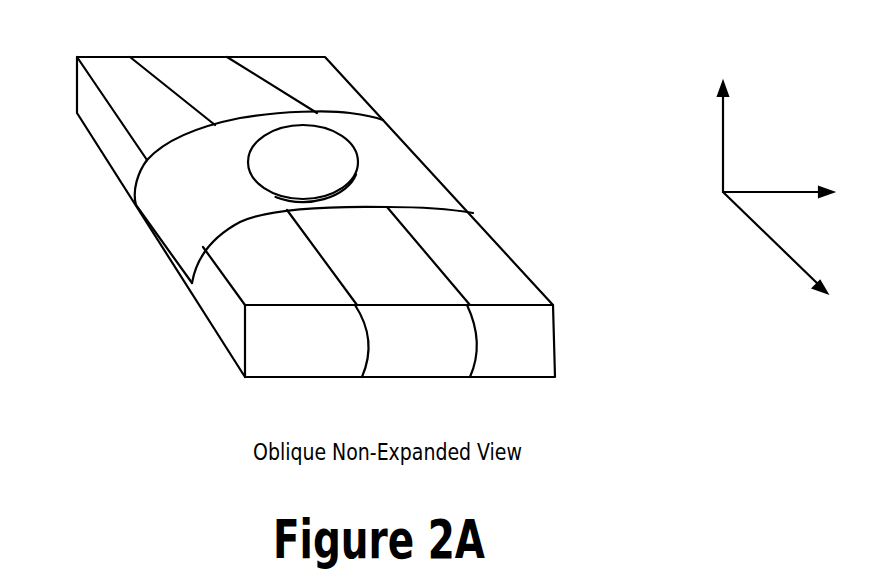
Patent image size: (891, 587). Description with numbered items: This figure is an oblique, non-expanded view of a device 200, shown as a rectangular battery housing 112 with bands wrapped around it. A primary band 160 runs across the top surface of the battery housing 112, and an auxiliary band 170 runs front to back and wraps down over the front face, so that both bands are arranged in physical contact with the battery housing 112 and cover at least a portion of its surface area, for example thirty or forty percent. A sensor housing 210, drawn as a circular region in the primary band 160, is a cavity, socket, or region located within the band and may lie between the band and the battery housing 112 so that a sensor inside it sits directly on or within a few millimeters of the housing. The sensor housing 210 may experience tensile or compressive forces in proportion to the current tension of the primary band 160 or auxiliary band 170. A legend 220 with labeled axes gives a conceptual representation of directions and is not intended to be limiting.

The device 200 is at (343, 215).
The battery housing 112 is at (555, 327).
The primary band 160 is at (304, 197).
The auxiliary band 170 is at (368, 338).
The sensor housing 210 is at (249, 170).
The legend 220 is at (783, 138).